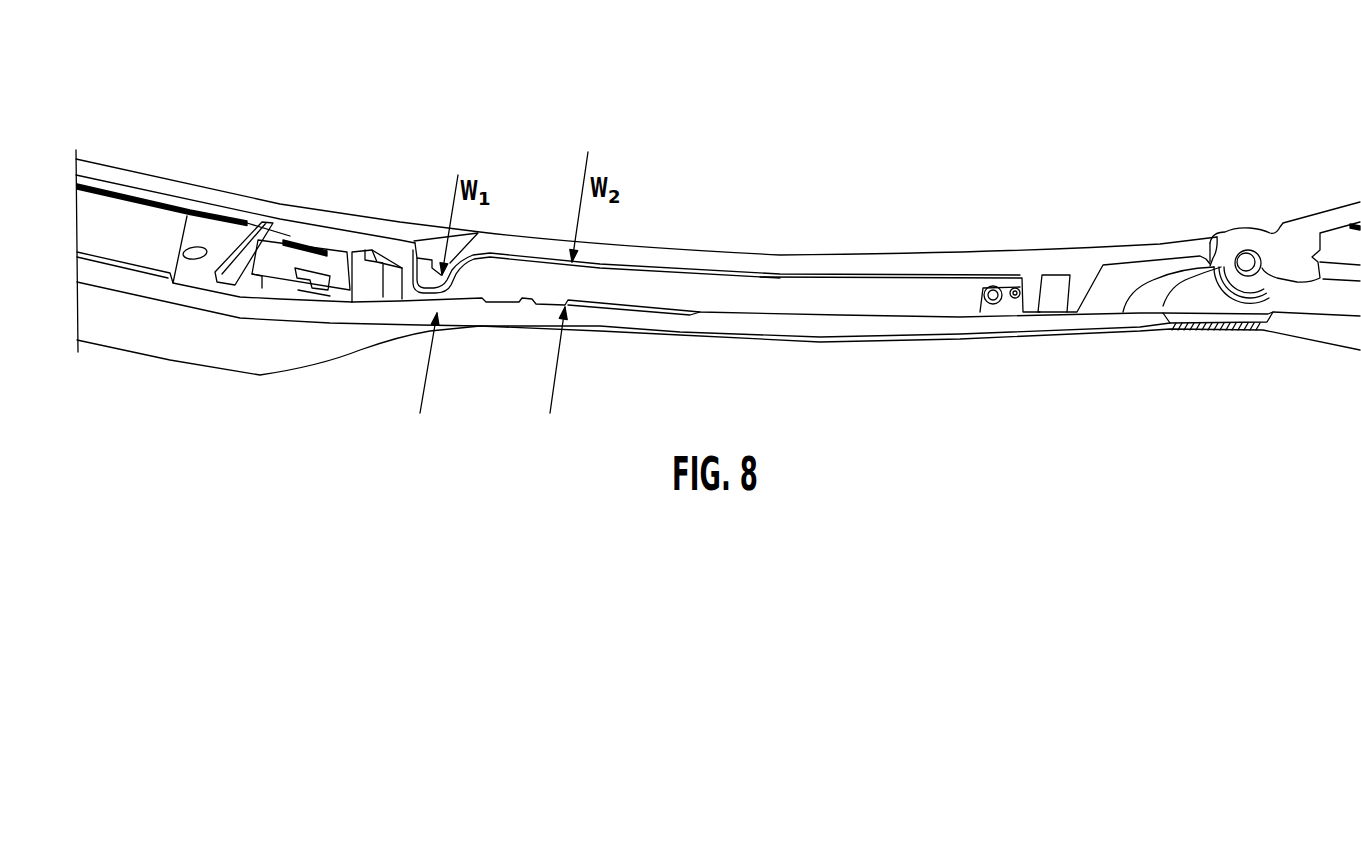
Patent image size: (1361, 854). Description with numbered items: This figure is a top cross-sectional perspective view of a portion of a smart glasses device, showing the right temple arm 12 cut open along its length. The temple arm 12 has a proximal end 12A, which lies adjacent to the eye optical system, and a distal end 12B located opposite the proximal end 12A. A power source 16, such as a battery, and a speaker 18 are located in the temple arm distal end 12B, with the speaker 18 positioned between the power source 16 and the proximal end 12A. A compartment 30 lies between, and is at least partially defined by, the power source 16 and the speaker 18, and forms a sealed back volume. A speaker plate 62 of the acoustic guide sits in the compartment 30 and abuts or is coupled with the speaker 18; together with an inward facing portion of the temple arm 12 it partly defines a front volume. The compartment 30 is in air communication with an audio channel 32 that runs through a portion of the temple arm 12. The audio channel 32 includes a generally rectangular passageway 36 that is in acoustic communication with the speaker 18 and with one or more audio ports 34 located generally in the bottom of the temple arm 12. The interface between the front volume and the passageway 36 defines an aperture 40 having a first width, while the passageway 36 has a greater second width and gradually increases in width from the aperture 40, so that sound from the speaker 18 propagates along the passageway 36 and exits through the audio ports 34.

The right temple arm 12 is at (1081, 260).
The proximal end 12A is at (1153, 370).
The distal end 12B is at (128, 440).
The power source 16 is at (146, 222).
The speaker 18 is at (313, 258).
The compartment 30 is at (216, 231).
The audio channel 32 is at (730, 252).
The audio ports 34 is at (1017, 302).
The passageway 36 is at (820, 290).
The aperture 40 is at (412, 242).
The speaker plate 62 is at (347, 250).